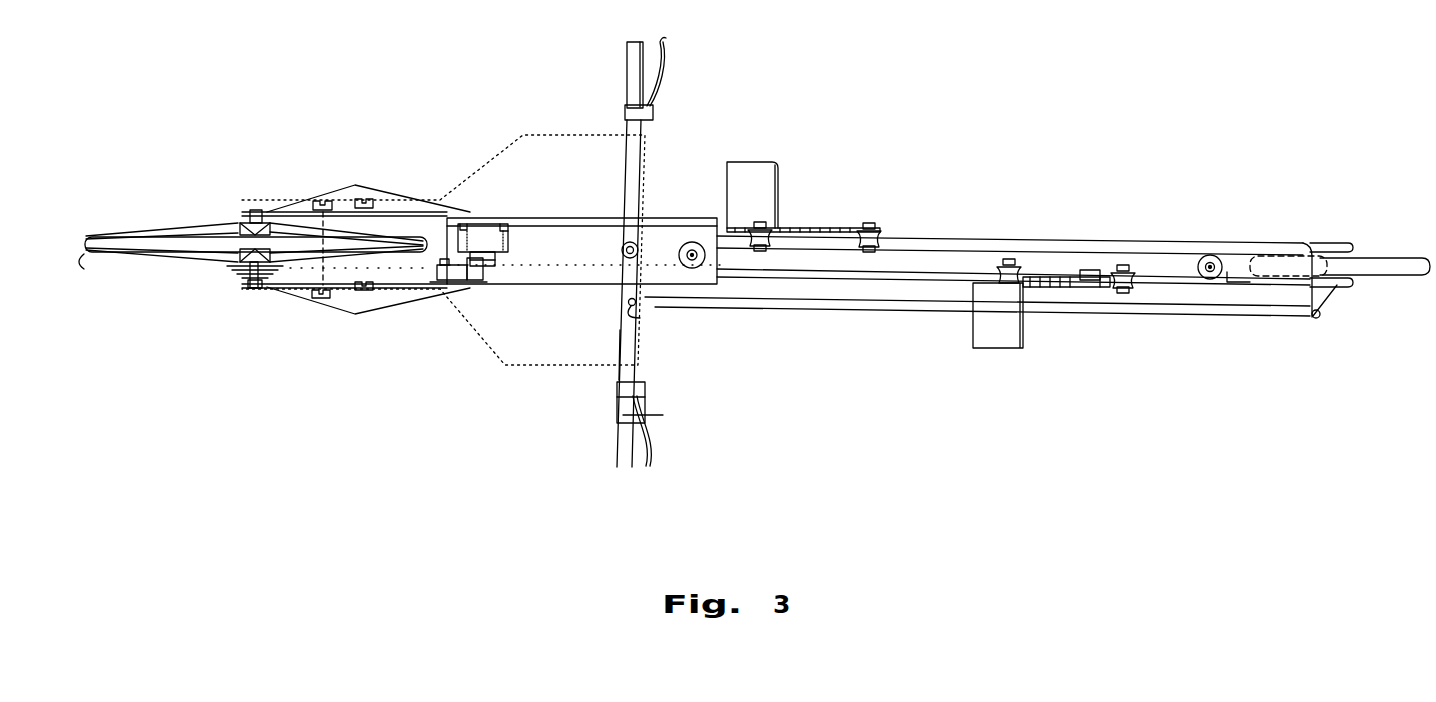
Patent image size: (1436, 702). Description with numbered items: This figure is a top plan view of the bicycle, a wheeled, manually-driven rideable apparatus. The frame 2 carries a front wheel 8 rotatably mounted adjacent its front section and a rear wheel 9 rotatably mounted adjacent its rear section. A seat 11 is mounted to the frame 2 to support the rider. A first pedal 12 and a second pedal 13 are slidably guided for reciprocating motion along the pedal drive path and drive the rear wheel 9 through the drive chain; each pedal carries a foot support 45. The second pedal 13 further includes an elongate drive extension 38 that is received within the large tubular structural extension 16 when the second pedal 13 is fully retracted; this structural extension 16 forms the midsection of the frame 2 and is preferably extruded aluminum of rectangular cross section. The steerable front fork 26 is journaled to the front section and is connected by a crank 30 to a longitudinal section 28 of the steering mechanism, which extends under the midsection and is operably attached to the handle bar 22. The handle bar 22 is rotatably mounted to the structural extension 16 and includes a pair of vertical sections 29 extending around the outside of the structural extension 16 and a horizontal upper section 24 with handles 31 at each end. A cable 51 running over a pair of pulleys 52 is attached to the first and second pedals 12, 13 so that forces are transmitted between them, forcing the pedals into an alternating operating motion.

The frame 2 is at (934, 234).
The front wheel 8 is at (1406, 256).
The rear wheel 9 is at (263, 251).
The seat 11 is at (470, 173).
The first pedal 12 is at (1037, 293).
The second pedal 13 is at (797, 230).
The structural extension 16 is at (533, 272).
The handle bar 22 is at (620, 355).
The horizontal upper section 24 is at (641, 158).
The front fork 26 is at (1350, 247).
The longitudinal section 28 is at (1205, 318).
The vertical sections 29 is at (632, 201).
The crank 30 is at (1334, 300).
The handles 31 is at (627, 80).
The drive extension 38 is at (528, 228).
The foot support 45 is at (748, 183).
The cable 51 is at (1035, 247).
The pulleys 52 is at (706, 258).